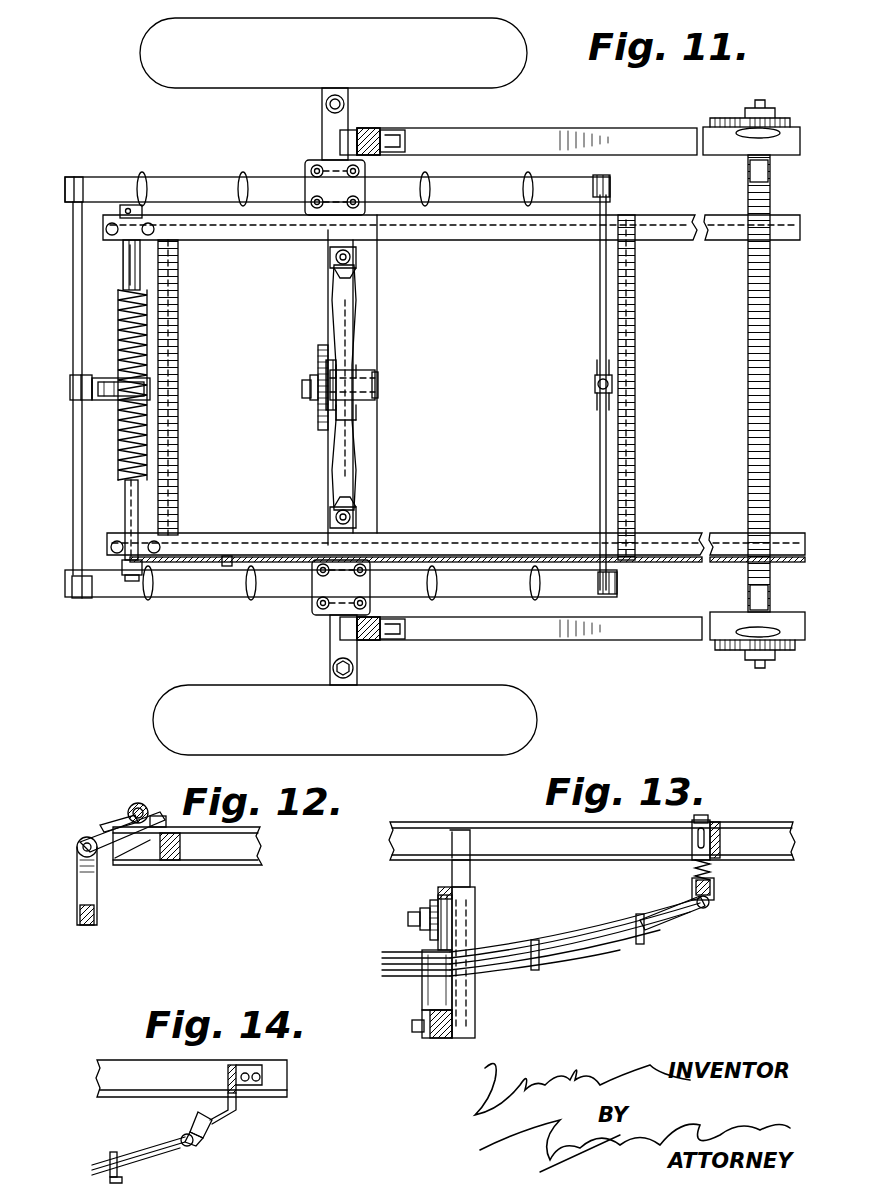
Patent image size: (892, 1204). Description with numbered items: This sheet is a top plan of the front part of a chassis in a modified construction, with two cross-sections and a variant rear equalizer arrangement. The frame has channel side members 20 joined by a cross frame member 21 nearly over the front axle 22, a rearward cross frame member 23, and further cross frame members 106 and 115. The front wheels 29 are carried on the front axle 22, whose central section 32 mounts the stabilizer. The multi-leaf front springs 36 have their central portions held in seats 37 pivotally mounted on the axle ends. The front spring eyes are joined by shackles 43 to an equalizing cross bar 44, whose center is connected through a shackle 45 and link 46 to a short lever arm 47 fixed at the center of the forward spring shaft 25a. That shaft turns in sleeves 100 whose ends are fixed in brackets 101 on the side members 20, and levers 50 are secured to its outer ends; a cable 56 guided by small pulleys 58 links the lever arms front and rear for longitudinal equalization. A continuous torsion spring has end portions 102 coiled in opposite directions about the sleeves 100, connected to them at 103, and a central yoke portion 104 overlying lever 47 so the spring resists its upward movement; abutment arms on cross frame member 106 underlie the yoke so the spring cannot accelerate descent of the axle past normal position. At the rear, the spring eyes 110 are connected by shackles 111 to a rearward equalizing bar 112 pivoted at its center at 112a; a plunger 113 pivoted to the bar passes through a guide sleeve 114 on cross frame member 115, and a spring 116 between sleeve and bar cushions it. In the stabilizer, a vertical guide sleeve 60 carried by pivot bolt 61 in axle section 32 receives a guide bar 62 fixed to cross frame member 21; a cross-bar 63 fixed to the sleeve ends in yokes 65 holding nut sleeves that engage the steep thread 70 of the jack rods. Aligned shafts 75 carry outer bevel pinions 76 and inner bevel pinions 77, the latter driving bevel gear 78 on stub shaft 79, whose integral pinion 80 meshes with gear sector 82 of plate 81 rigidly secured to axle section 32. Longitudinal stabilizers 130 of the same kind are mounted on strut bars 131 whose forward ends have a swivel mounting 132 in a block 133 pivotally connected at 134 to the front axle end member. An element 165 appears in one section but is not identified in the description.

In FIG. 11, the side members 20 is at (482, 242).
In FIG. 12, the side members 20 is at (262, 846).
In FIG. 13, the side members 20 is at (555, 852).
In FIG. 14, the side members 20 is at (118, 1075).
In FIG. 11, the cross frame member 21 is at (360, 322).
In FIG. 11, the front axle 22 is at (328, 282).
In FIG. 13, the rearward cross frame member 23 is at (460, 830).
In FIG. 11, the forward spring shaft 25a is at (128, 262).
In FIG. 12, the forward spring shaft 25a is at (142, 806).
In FIG. 11, the front wheels 29 is at (142, 47).
In FIG. 13, the central axle section 32 is at (445, 1038).
In FIG. 11, the front springs 36 is at (472, 185).
In FIG. 13, the front springs 36 is at (508, 965).
In FIG. 14, the front springs 36 is at (100, 1160).
In FIG. 11, the spring seats 37 is at (318, 185).
In FIG. 13, the spring seats 37 is at (430, 975).
In FIG. 11, the shackles 43 is at (67, 181).
In FIG. 11, the equalizing cross bar 44 is at (78, 478).
In FIG. 12, the equalizing cross bar 44 is at (87, 926).
In FIG. 11, the shackle 45 is at (76, 402).
In FIG. 12, the link 46 is at (78, 876).
In FIG. 11, the lever arm 47 is at (120, 372).
In FIG. 12, the lever arm 47 is at (88, 828).
In FIG. 11, the levers 50 is at (152, 550).
In FIG. 11, the cable 56 is at (518, 556).
In FIG. 11, the pulleys 58 is at (228, 556).
In FIG. 11, the guide sleeve 60 is at (378, 390).
In FIG. 13, the guide sleeve 60 is at (475, 1022).
In FIG. 13, the pivot bolt 61 is at (414, 1032).
In FIG. 11, the guide bar 62 is at (370, 378).
In FIG. 13, the guide bar 62 is at (470, 874).
In FIG. 11, the cross-bar 63 is at (350, 422).
In FIG. 13, the cross-bar 63 is at (445, 888).
In FIG. 11, the yokes 65 is at (336, 257).
In FIG. 11, the thread 70 is at (352, 257).
In FIG. 11, the shafts 75 is at (352, 310).
In FIG. 11, the bevel pinions 76 is at (355, 276).
In FIG. 11, the bevel pinions 77 is at (356, 360).
In FIG. 11, the bevel gear 78 is at (328, 372).
In FIG. 13, the bevel gear 78 is at (438, 900).
In FIG. 11, the stub shaft 79 is at (305, 390).
In FIG. 13, the stub shaft 79 is at (408, 918).
In FIG. 11, the pinion 80 is at (312, 385).
In FIG. 13, the pinion 80 is at (420, 922).
In FIG. 13, the plate 81 is at (428, 1020).
In FIG. 11, the gear sector 82 is at (320, 348).
In FIG. 13, the gear sector 82 is at (434, 920).
In FIG. 11, the sleeves 100 is at (128, 272).
In FIG. 12, the sleeves 100 is at (132, 806).
In FIG. 11, the brackets 101 is at (143, 215).
In FIG. 12, the brackets 101 is at (160, 815).
In FIG. 11, the spring end portions 102 is at (145, 337).
In FIG. 11, the spring end connections 103 is at (140, 292).
In FIG. 11, the yoke portion 104 is at (100, 400).
In FIG. 12, the yoke portion 104 is at (110, 825).
In FIG. 12, the cross frame member 106 is at (178, 846).
In FIG. 13, the rear spring eyes 110 is at (708, 906).
In FIG. 14, the rear spring eyes 110 is at (186, 1147).
In FIG. 11, the shackles 111 is at (612, 186).
In FIG. 13, the shackles 111 is at (714, 893).
In FIG. 11, the rearward equalizing bar 112 is at (602, 445).
In FIG. 13, the rearward equalizing bar 112 is at (690, 898).
In FIG. 14, the rearward equalizing bar 112 is at (205, 1132).
In FIG. 14, the pivotal connection 112a is at (212, 1122).
In FIG. 11, the plunger 113 is at (596, 383).
In FIG. 13, the plunger 113 is at (695, 883).
In FIG. 11, the guide sleeve 114 is at (600, 376).
In FIG. 13, the guide sleeve 114 is at (700, 818).
In FIG. 11, the cross frame member 115 is at (636, 345).
In FIG. 13, the cross frame member 115 is at (720, 830).
In FIG. 14, the cross frame member 115 is at (235, 1105).
In FIG. 11, the spring 116 is at (598, 392).
In FIG. 13, the spring 116 is at (712, 870).
In FIG. 11, the longitudinal stabilizers 130 is at (735, 114).
In FIG. 11, the strut bars 131 is at (618, 140).
In FIG. 11, the swivel mounting 132 is at (400, 142).
In FIG. 11, the block 133 is at (372, 138).
In FIG. 11, the pivotal connection 134 is at (342, 138).
In FIG. 12, the line 165 is at (138, 850).